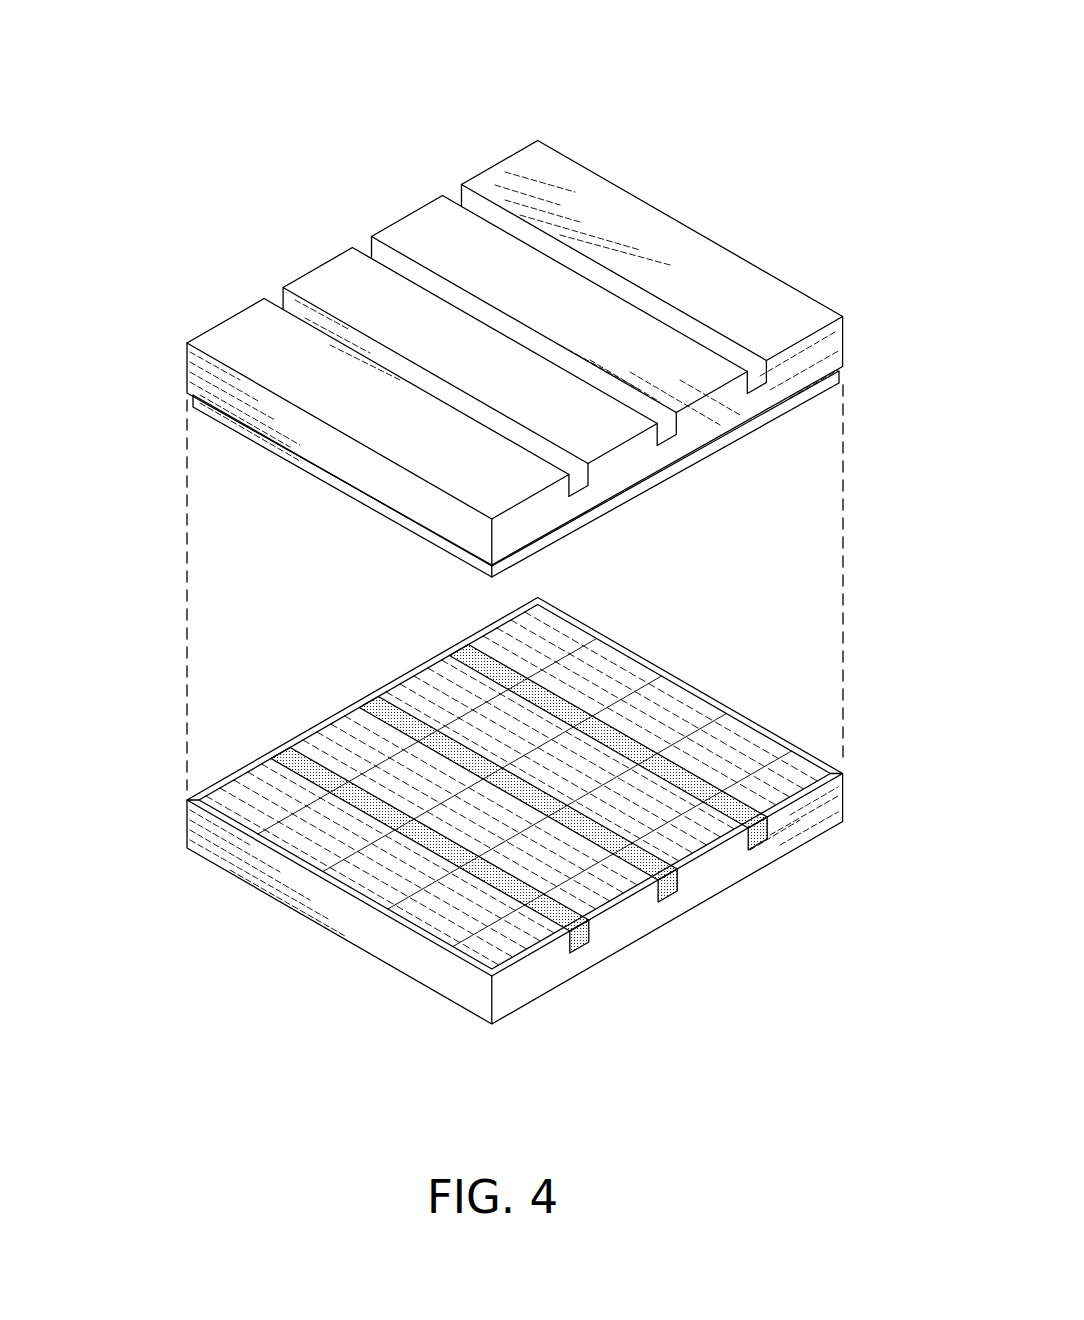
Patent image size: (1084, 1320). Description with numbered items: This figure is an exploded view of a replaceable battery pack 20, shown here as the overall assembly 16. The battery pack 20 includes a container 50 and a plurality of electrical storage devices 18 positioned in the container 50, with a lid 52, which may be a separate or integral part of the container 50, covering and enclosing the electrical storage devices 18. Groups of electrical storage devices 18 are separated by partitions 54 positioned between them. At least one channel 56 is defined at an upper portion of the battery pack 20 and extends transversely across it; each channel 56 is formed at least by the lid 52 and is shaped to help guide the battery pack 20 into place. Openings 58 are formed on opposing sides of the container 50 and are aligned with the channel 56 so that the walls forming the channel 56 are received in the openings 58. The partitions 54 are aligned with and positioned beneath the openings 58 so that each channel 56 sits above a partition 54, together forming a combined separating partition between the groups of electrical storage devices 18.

The mold assembly 16 is at (292, 114).
The battery pack 20 is at (222, 225).
The lid 52 is at (250, 338).
The channel 56 is at (477, 210).
The container 50 is at (538, 983).
The electrical storage devices 18 is at (288, 825).
The partitions 54 is at (463, 862).
The openings 58 is at (767, 842).